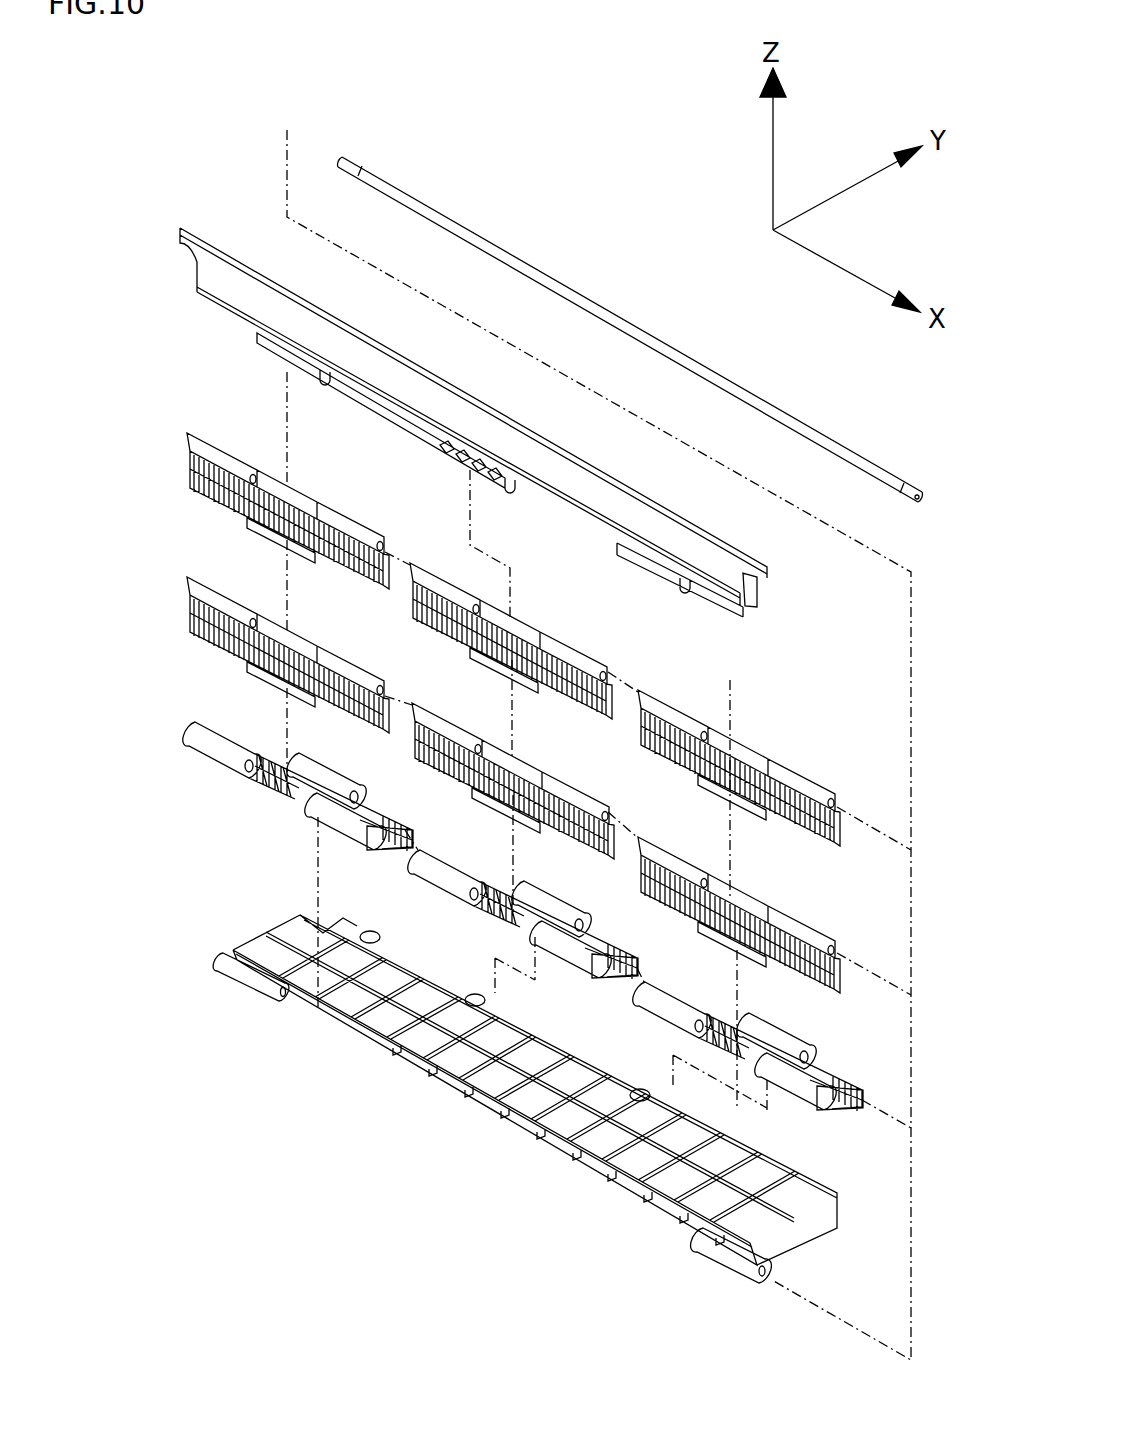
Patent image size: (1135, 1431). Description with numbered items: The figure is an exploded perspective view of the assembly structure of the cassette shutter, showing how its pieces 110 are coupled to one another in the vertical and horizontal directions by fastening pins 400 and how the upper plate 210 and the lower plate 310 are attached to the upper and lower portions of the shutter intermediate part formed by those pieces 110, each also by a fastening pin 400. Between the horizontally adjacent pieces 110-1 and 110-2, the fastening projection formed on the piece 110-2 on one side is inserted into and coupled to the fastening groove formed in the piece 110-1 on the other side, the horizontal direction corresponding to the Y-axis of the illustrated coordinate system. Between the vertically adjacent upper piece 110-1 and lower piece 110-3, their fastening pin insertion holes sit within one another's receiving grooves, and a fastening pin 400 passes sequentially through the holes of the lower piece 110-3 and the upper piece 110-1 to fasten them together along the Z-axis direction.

The pieces 110 is at (446, 772).
The piece 110-1 is at (312, 484).
The piece 110-2 is at (530, 604).
The piece 110-3 is at (304, 622).
The upper plate 210 is at (160, 262).
The lower plate 310 is at (200, 930).
The fastening pin 400 is at (636, 328).